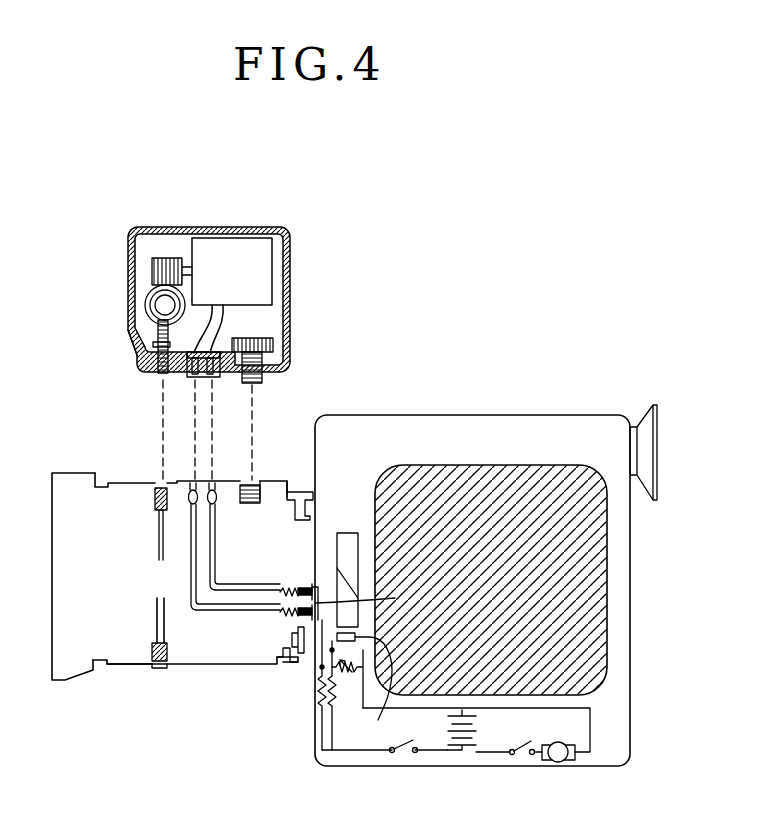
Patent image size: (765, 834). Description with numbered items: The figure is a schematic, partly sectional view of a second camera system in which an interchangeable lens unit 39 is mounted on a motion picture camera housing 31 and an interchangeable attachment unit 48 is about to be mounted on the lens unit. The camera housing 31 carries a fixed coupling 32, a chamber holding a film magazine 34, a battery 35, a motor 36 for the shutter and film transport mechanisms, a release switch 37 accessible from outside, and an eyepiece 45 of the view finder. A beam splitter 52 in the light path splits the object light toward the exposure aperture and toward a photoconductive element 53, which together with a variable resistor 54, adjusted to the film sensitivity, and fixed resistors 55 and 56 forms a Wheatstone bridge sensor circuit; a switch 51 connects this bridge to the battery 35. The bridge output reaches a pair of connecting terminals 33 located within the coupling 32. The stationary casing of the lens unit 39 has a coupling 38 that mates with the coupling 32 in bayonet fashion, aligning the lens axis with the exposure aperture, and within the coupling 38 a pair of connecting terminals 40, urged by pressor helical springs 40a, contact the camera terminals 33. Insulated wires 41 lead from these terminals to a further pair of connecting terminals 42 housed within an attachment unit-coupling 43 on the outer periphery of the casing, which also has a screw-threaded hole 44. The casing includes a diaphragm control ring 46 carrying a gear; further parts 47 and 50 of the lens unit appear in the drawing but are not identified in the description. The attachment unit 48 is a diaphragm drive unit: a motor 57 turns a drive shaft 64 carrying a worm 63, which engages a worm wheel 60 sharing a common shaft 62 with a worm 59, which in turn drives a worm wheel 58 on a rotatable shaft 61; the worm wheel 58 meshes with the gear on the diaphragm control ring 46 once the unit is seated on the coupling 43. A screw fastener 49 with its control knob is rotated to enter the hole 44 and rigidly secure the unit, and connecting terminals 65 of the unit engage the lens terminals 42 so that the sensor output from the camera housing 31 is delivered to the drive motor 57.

The motion picture camera housing 31 is at (420, 428).
The coupling 32 is at (302, 492).
The connecting terminal 33 is at (314, 590).
The film magazine 34 is at (500, 478).
The battery 35 is at (455, 738).
The motor 36 is at (558, 762).
The release switch 37 is at (524, 760).
The coupling 38 is at (298, 655).
The interchangeable lens unit 39 is at (182, 672).
The connecting terminal 40 is at (300, 589).
The pressor helical spring 40a is at (282, 590).
The insulated wire 41 is at (208, 576).
The connecting terminal 42 is at (215, 504).
The attachment unit-coupling 43 is at (272, 490).
The screw-threaded hole 44 is at (244, 487).
The eyepiece 45 is at (652, 448).
The diaphragm control ring 46 is at (132, 667).
The head member 47 is at (70, 672).
The interchangeable attachment unit 48 is at (208, 235).
The screw fastener 49 is at (253, 383).
The pin 50 is at (157, 628).
The switch 51 is at (408, 758).
The beam splitter 52 is at (348, 545).
The photoconductive element 53 is at (367, 689).
The variable resistor 54 is at (347, 675).
The fixed resistor 55 is at (336, 698).
The fixed resistor 56 is at (318, 690).
The motor 57 is at (258, 264).
The worm wheel 58 is at (158, 368).
The worm 59 is at (152, 300).
The worm wheel 60 is at (148, 292).
The rotatable shaft 61 is at (153, 344).
The common shaft 62 is at (160, 305).
The worm 63 is at (156, 262).
The drive shaft 64 is at (188, 267).
The connecting terminal 65 is at (210, 372).